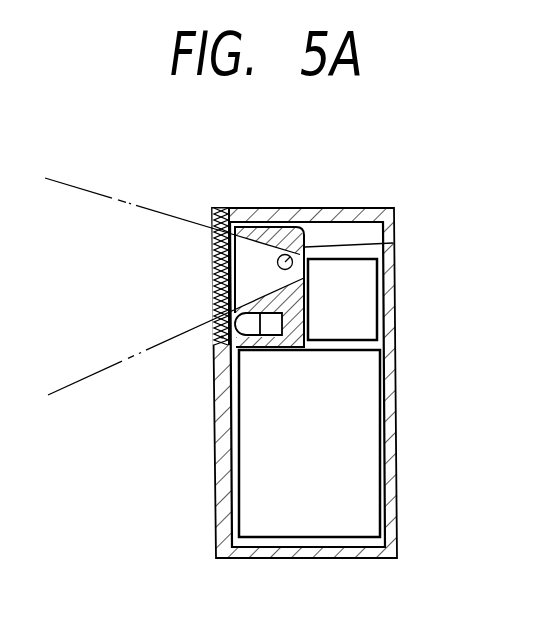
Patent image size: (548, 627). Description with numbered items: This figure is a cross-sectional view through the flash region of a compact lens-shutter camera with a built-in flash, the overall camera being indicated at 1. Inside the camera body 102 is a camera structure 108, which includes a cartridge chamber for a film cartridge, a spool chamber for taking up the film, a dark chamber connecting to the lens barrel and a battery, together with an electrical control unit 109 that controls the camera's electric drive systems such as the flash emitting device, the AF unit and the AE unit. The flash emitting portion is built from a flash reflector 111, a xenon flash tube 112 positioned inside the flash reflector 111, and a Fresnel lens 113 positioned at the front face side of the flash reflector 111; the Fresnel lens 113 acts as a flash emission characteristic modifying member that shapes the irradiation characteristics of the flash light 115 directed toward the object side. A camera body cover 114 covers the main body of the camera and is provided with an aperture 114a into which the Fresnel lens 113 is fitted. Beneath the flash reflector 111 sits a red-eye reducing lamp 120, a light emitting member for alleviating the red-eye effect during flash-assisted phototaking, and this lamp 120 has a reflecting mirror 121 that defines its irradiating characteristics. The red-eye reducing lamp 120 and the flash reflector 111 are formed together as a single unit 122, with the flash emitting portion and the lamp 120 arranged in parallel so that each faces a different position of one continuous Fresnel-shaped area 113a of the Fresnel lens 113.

The electronic camera 1 is at (460, 205).
The camera body 102 is at (406, 493).
The camera structure 108 is at (363, 408).
The electrical control unit 109 is at (358, 303).
The flash reflector 111 is at (273, 236).
The xenon flash tube 112 is at (393, 243).
The Fresnel lens 113 is at (212, 209).
The continuous Fresnel-shaped area 113a is at (258, 236).
The camera body cover 114 is at (217, 510).
The aperture 114a is at (226, 212).
The flash light 115 is at (72, 183).
The red-eye reducing lamp 120 is at (222, 337).
The reflecting mirror 121 is at (267, 348).
The unit 122 is at (305, 237).